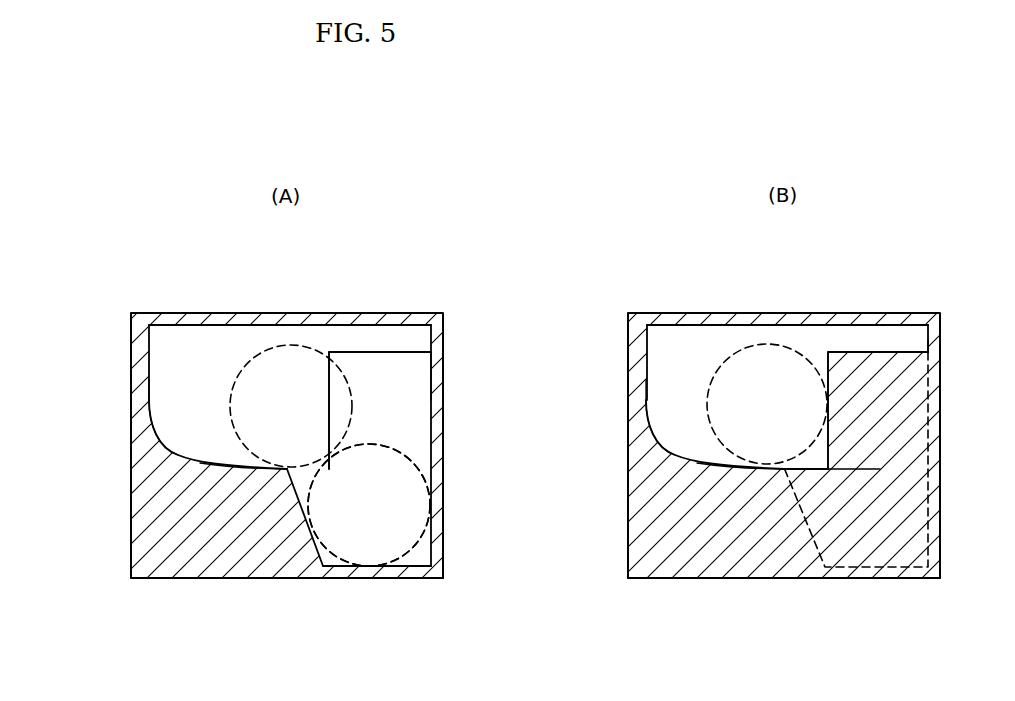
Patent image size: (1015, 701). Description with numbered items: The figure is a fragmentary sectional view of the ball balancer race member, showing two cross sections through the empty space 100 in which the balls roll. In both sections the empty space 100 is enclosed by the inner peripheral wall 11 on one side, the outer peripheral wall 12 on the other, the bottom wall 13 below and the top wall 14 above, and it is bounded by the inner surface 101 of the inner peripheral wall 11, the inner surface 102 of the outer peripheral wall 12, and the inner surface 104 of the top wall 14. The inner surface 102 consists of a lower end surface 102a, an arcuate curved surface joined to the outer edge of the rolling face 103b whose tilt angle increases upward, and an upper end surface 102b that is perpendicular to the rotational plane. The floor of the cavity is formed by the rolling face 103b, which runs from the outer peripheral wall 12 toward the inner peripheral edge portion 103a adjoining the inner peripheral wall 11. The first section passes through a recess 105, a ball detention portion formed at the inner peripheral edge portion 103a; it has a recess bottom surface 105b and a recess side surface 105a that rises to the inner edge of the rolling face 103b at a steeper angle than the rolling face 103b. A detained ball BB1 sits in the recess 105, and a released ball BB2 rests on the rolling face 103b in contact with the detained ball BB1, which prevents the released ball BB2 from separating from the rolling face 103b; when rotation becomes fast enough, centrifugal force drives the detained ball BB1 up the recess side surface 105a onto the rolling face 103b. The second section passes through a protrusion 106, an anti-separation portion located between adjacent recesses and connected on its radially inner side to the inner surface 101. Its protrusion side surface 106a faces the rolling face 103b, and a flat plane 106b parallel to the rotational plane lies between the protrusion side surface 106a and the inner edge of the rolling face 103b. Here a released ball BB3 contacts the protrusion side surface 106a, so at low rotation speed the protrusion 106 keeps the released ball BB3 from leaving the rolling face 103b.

The empty space 100 is at (181, 352).
The inner peripheral wall 11 is at (437, 350).
The outer peripheral wall 12 is at (131, 345).
The bottom wall 13 is at (171, 572).
The top wall 14 is at (190, 320).
The inner surface of the inner peripheral wall 101 is at (432, 364).
The inner surface of the outer peripheral wall 102 is at (73, 378).
The lower end surface 102a is at (173, 438).
The upper end surface 102b is at (146, 395).
The inner peripheral edge portion 103a is at (430, 655).
The rolling face 103b is at (246, 464).
The inner surface of the top wall 104 is at (222, 322).
The recess 105 is at (396, 518).
The recess side surface 105a is at (326, 568).
The recess bottom surface 105b is at (411, 568).
The protrusion 106 is at (396, 409).
The protrusion side surface 106a is at (330, 372).
The flat plane 106b is at (827, 468).
The detained ball BB1 is at (425, 445).
The released ball BB2 is at (292, 345).
The released ball BB3 is at (770, 343).